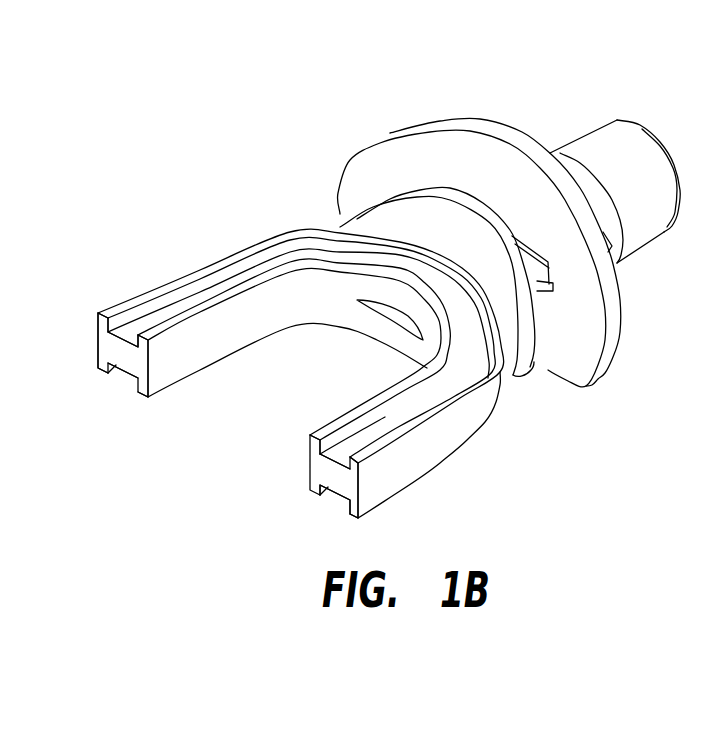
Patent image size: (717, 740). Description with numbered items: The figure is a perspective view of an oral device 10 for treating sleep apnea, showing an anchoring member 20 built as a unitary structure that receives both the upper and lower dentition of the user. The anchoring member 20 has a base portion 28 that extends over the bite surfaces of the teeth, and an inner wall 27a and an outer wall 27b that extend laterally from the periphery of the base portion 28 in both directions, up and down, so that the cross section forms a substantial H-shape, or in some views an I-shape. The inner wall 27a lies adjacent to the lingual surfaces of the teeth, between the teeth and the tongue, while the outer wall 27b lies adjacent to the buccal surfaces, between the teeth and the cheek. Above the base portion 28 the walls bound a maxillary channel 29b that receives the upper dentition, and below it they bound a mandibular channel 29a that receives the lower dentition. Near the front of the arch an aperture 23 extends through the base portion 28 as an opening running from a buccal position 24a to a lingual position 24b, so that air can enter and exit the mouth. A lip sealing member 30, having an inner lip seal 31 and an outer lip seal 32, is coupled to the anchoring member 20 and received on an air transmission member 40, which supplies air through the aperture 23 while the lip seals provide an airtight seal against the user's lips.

The oral device 10 is at (516, 74).
The anchoring member 20 is at (123, 284).
The aperture 23 is at (397, 311).
The buccal position 24a is at (326, 218).
The lingual position 24b is at (364, 383).
The inner wall 27a is at (135, 389).
The outer wall 27b is at (97, 365).
The base portion 28 is at (107, 343).
The mandibular channel 29a is at (124, 378).
The maxillary channel 29b is at (328, 465).
The lip sealing member 30 is at (331, 141).
The inner lip seal 31 is at (525, 360).
The outer lip seal 32 is at (617, 357).
The air transmission member 40 is at (603, 140).